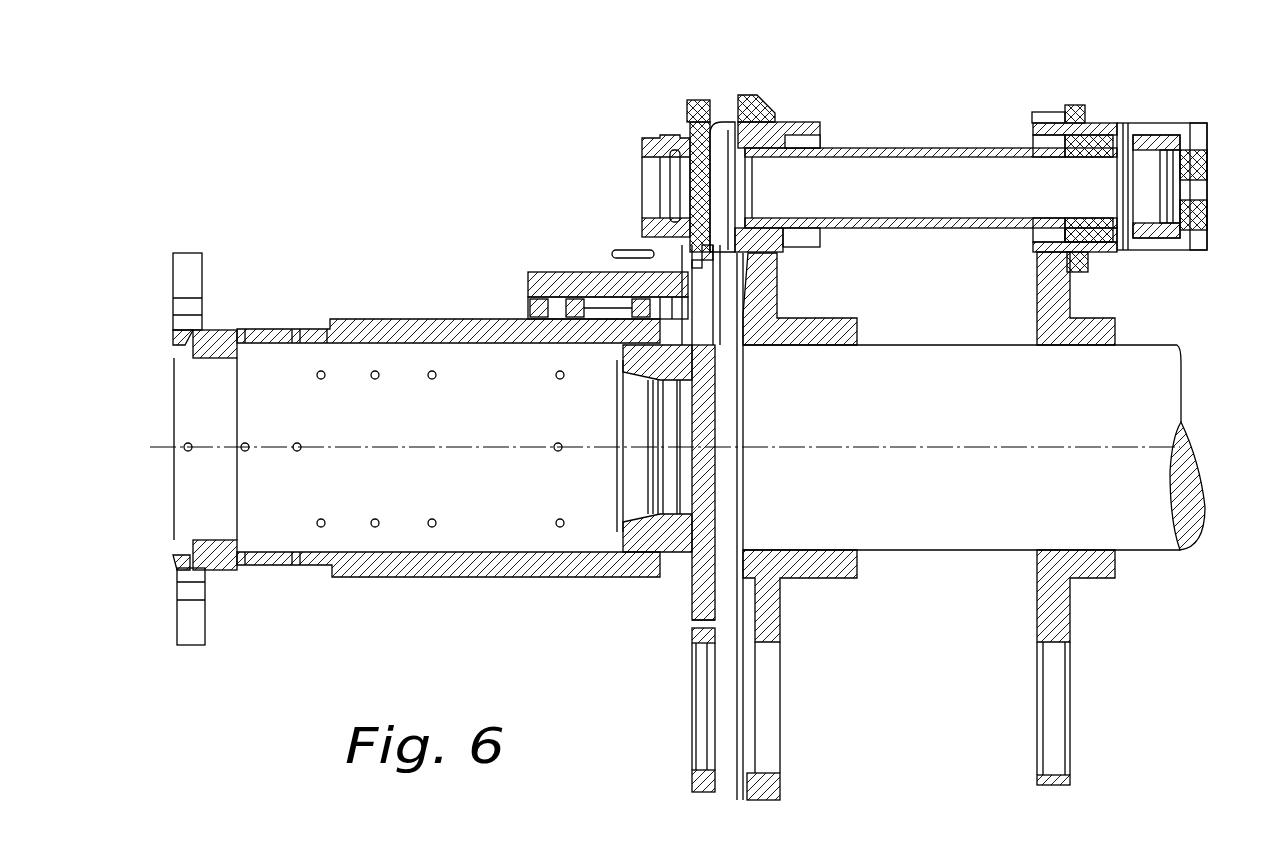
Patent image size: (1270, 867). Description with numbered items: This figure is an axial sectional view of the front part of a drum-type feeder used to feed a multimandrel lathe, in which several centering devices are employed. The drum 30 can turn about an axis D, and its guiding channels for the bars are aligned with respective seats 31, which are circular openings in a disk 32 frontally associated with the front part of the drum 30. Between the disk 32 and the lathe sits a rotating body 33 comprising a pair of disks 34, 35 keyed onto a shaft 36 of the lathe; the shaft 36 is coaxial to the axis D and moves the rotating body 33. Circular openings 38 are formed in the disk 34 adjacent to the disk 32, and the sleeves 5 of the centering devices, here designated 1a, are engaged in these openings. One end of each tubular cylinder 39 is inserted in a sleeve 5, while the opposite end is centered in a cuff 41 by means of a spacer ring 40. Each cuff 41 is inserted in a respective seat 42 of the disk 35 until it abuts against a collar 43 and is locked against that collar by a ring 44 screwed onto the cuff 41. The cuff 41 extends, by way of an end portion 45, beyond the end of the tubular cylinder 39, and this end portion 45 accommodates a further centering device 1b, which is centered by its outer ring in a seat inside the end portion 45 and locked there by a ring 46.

The centering device 1a is at (630, 157).
The further centering device 1b is at (1164, 262).
The sleeve 5 is at (790, 247).
The drum 30 is at (405, 303).
The seat 31 is at (697, 645).
The disk 32 is at (695, 782).
The rotating body 33 is at (857, 135).
The disk 34 is at (777, 792).
The disk 35 is at (1037, 778).
The shaft 36 is at (932, 528).
The circular opening 38 is at (767, 645).
The tubular cylinder 39 is at (903, 229).
The spacer ring 40 is at (1110, 123).
The cuff 41 is at (1123, 250).
The seat 42 is at (1053, 644).
The collar 43 is at (1025, 118).
The ring 44 is at (1073, 105).
The end portion 45 is at (1160, 123).
The ring 46 is at (1207, 124).
The axis D is at (487, 442).